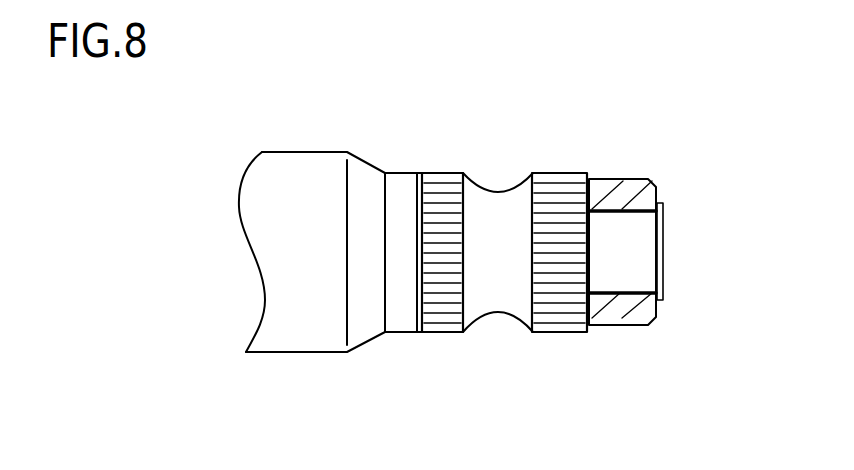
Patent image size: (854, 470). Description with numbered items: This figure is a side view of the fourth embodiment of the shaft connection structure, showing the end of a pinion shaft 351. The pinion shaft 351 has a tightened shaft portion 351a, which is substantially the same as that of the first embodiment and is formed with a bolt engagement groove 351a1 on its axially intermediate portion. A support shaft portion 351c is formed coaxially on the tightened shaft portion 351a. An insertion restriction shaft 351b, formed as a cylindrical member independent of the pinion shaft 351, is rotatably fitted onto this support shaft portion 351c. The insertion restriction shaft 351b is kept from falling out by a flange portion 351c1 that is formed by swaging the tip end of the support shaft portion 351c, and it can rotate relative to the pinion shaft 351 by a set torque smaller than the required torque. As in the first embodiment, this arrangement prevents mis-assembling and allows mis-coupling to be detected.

The pinion shaft 351 is at (300, 343).
The tightened shaft portion 351a is at (557, 172).
The bolt engagement groove 351a1 is at (498, 188).
The insertion restriction shaft 351b is at (630, 187).
The support shaft portion 351c is at (650, 252).
The flange portion 351c1 is at (661, 293).